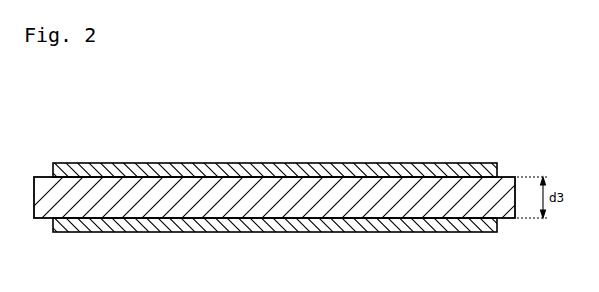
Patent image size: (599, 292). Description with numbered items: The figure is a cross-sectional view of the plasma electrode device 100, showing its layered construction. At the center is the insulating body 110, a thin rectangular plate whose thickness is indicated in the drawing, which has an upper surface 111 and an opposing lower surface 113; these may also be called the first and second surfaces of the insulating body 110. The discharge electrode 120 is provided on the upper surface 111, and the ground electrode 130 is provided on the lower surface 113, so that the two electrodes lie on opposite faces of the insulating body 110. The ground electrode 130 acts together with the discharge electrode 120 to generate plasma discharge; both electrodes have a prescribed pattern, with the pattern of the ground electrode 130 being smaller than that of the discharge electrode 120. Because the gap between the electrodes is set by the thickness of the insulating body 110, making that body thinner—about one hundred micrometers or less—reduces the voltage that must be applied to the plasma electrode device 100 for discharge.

The plasma electrode device 100 is at (336, 114).
The insulating body 110 is at (128, 178).
The upper surface 111 is at (92, 175).
The lower surface 113 is at (86, 223).
The discharge electrode 120 is at (173, 163).
The ground electrode 130 is at (244, 231).